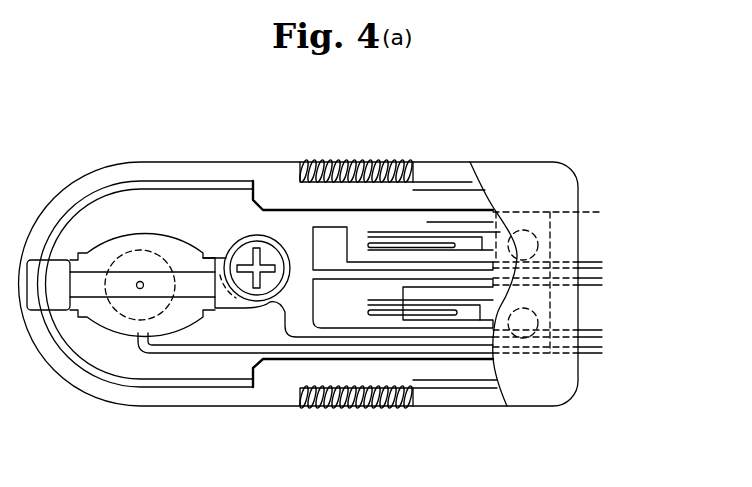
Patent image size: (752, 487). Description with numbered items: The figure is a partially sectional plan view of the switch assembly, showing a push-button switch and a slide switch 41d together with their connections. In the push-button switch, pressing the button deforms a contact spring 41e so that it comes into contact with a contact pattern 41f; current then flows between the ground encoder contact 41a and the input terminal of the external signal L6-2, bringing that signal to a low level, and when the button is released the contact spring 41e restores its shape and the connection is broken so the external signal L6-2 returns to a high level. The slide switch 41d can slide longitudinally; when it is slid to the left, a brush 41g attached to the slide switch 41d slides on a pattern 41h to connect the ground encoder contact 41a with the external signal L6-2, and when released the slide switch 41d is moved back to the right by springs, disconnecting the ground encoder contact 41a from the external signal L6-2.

The contact spring 41e is at (105, 260).
The contact pattern 41f is at (127, 318).
The pattern 41h is at (333, 240).
The brush 41g is at (420, 233).
The slide switch 41d is at (556, 396).
The external signal L6-2 is at (602, 265).
The ground encoder contact 41a is at (602, 282).